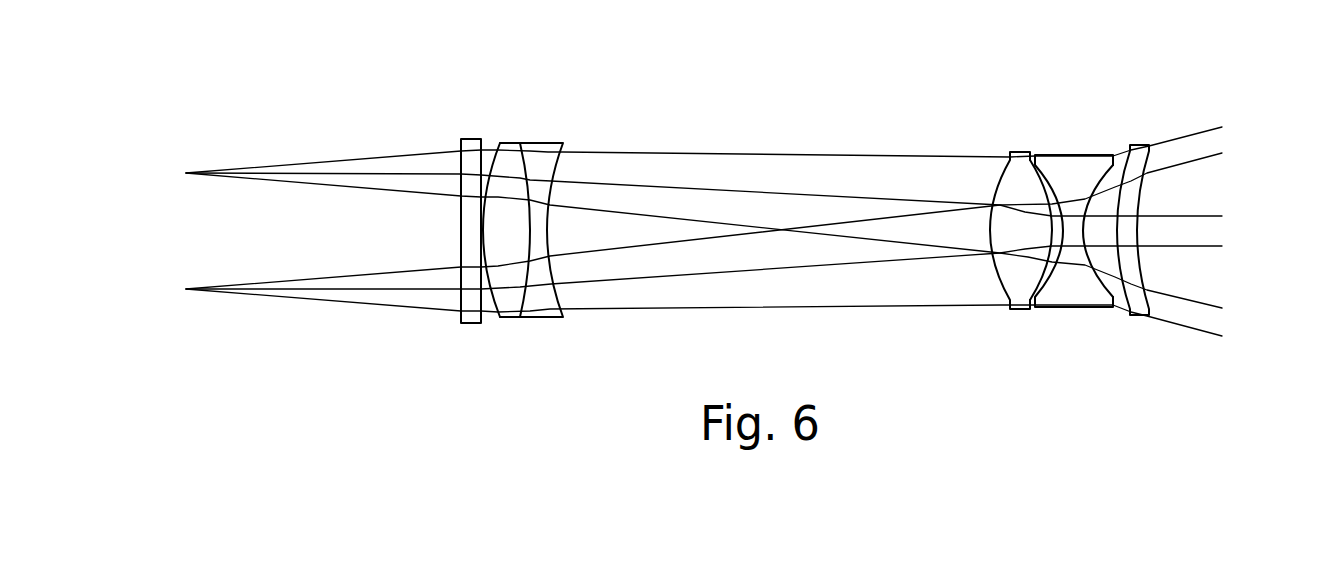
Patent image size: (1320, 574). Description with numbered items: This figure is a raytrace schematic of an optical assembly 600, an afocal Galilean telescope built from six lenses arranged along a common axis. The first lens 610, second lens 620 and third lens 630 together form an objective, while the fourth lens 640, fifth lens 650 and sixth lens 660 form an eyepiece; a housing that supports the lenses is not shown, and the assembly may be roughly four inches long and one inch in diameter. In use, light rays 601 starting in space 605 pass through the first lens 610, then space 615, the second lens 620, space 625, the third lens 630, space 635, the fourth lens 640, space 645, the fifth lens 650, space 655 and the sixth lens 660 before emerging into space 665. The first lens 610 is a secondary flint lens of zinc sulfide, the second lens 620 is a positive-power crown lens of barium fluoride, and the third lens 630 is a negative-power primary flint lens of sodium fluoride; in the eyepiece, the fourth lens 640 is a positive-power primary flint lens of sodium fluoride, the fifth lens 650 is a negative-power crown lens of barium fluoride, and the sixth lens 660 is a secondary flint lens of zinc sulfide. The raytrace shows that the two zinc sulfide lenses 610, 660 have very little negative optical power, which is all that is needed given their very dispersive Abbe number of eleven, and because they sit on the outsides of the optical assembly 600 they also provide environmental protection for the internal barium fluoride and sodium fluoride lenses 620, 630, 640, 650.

The optical assembly 600 is at (199, 112).
The light rays 601 is at (330, 161).
The space 605 is at (380, 243).
The first lens 610 is at (468, 142).
The space 615 is at (488, 305).
The second lens 620 is at (508, 150).
The space 625 is at (522, 313).
The third lens 630 is at (540, 155).
The space 635 is at (795, 337).
The fourth lens 640 is at (1023, 165).
The space 645 is at (1047, 278).
The fifth lens 650 is at (1077, 172).
The space 655 is at (1113, 288).
The sixth lens 660 is at (1127, 158).
The space 665 is at (1280, 243).